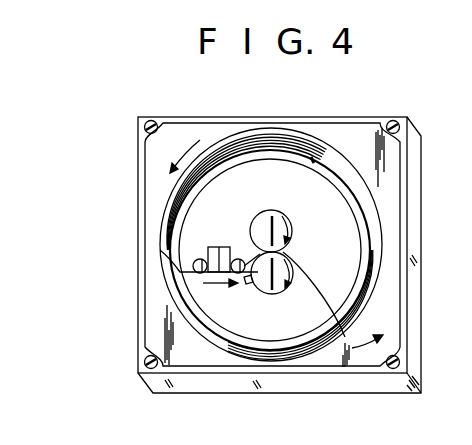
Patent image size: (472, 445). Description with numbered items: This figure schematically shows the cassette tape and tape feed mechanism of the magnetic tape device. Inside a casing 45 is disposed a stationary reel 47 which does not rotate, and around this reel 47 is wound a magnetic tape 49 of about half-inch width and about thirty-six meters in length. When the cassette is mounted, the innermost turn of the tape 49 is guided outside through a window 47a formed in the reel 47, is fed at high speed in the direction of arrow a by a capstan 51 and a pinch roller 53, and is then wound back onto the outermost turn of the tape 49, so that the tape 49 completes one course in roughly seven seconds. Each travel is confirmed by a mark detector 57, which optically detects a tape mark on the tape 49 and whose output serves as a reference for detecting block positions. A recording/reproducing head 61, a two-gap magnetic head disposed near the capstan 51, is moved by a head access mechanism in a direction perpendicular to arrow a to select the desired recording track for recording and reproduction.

The casing 45 is at (360, 117).
The stationary reel 47 is at (357, 207).
The window 47a is at (160, 250).
The magnetic tape 49 is at (165, 194).
The capstan 51 is at (278, 210).
The pinch roller 53 is at (283, 293).
The mark detector 57 is at (252, 288).
The recording/reproducing head 61 is at (222, 247).